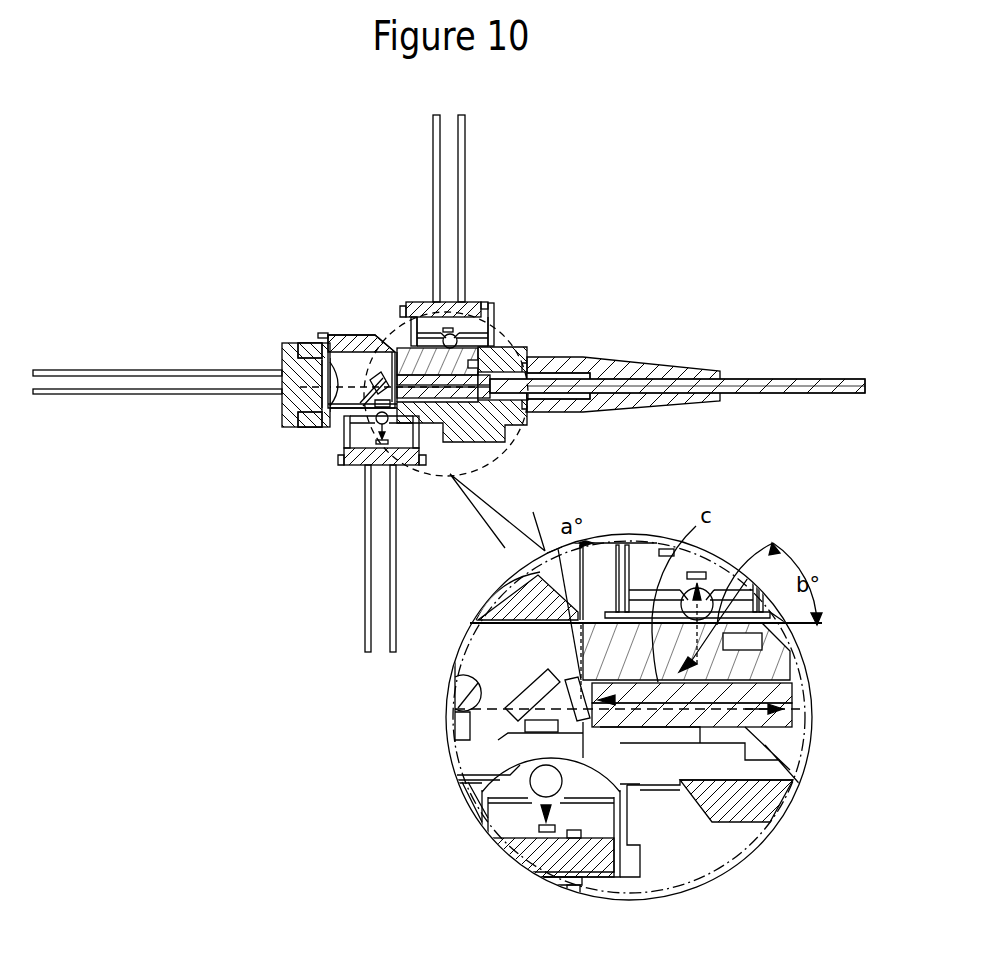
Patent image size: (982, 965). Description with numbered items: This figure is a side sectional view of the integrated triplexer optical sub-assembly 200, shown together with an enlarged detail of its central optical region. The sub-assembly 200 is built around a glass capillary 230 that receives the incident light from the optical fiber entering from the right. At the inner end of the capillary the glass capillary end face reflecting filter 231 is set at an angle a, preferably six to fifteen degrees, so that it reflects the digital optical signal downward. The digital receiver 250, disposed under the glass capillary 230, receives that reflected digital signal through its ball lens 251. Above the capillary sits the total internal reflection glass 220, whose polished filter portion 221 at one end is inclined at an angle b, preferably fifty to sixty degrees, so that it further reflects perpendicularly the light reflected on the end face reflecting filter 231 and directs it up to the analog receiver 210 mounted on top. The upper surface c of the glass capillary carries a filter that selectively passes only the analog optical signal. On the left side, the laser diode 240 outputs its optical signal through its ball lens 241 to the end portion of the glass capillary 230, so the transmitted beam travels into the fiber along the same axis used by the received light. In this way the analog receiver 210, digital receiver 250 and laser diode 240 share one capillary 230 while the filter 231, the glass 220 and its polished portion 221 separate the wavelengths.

The integrated triplexer optical sub-assembly 200 is at (622, 227).
The analog receiver 210 is at (487, 312).
The total internal reflection glass 220 is at (392, 335).
The ball lens 221 is at (485, 327).
The glass capillary 230 is at (516, 433).
The glass capillary end face reflecting filter 231 is at (388, 361).
The laser diode 240 is at (285, 411).
The ball lens 241 is at (343, 368).
The digital receiver 250 is at (425, 466).
The ball lens 251 is at (357, 406).